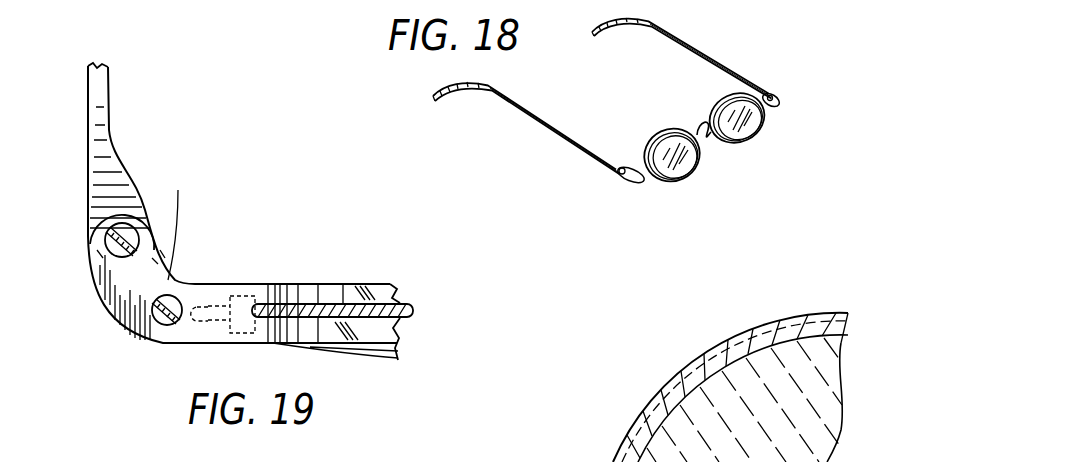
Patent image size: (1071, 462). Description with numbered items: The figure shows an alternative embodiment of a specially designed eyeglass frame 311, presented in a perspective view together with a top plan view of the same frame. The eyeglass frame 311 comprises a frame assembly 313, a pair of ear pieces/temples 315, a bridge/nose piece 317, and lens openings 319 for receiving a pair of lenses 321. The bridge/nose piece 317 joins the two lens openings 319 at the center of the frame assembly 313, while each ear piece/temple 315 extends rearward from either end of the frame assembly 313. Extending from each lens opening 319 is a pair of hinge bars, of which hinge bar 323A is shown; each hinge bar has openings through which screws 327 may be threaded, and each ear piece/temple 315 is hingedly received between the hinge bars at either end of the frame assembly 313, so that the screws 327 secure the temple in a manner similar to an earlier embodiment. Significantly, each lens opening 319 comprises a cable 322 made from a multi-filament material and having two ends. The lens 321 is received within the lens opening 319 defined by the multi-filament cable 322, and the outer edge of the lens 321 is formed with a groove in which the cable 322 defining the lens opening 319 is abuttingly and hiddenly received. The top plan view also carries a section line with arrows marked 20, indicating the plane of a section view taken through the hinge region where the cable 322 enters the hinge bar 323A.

In FIG. 19, the section line 20- 20 is at (475, 313).
In FIG. 18, the eyeglass frame 311 is at (613, 190).
In FIG. 19, the frame assembly 313 is at (232, 279).
In FIG. 18, the frame assembly 313 is at (652, 130).
In FIG. 19, the ear piece/temple 315 is at (88, 175).
In FIG. 18, the ear piece/temple 315 is at (556, 134).
In FIG. 18, the bridge/nose piece 317 is at (699, 125).
In FIG. 18, the lens opening 319 is at (720, 95).
In FIG. 18, the lens 321 is at (728, 150).
In FIG. 19, the cable 322 is at (345, 303).
In FIG. 19, the hinge bar 323A is at (140, 336).
In FIG. 19, the screw 327 is at (117, 232).